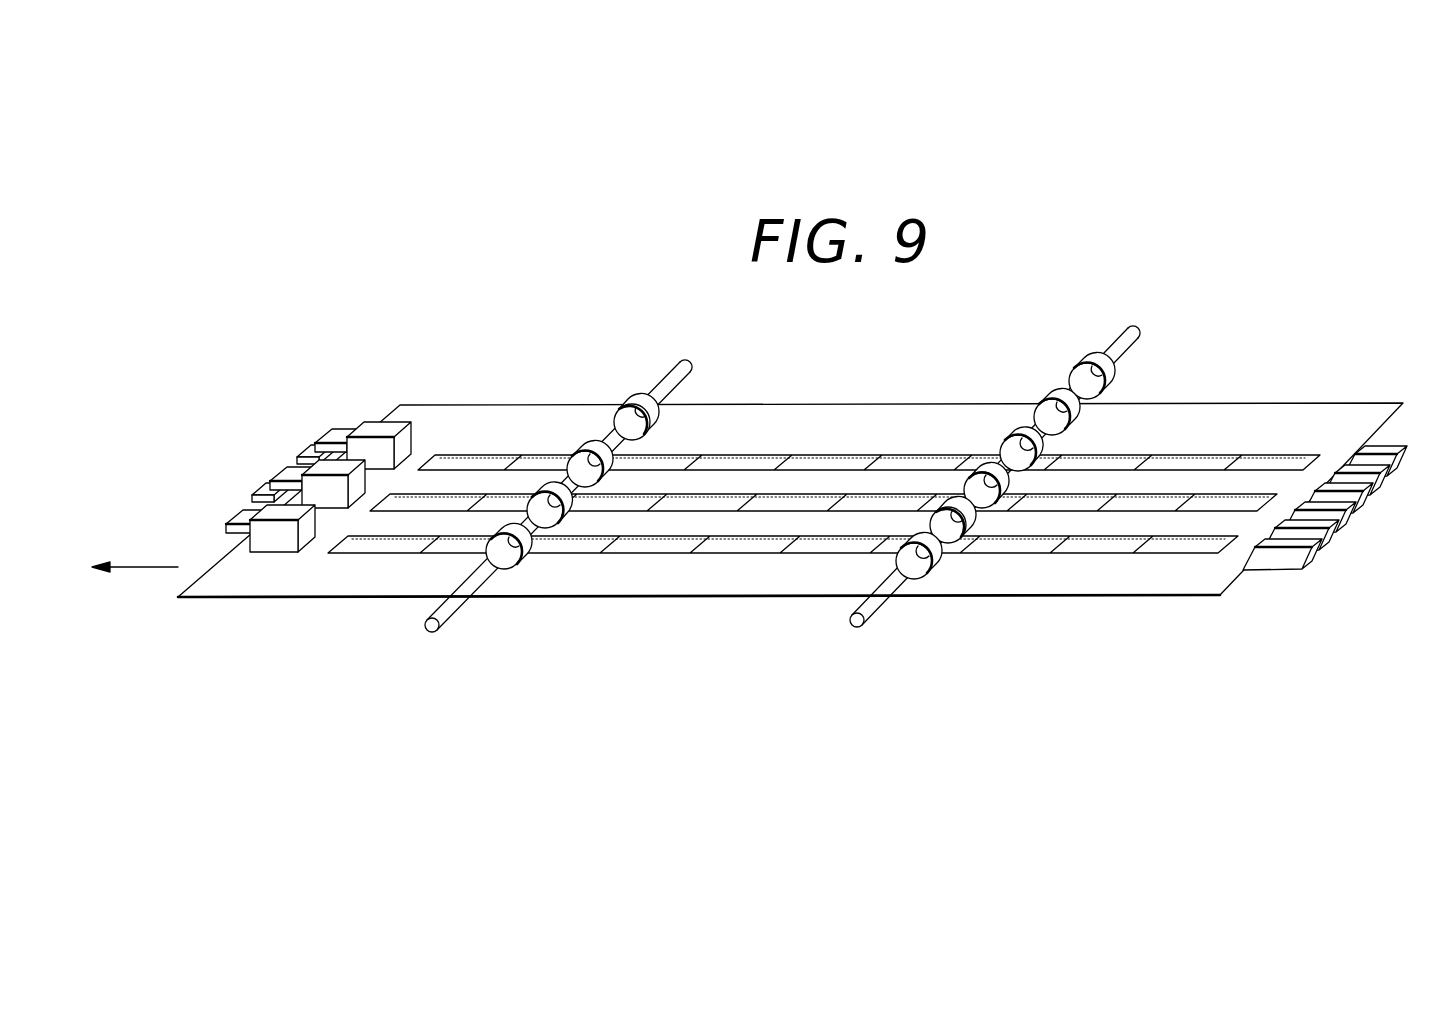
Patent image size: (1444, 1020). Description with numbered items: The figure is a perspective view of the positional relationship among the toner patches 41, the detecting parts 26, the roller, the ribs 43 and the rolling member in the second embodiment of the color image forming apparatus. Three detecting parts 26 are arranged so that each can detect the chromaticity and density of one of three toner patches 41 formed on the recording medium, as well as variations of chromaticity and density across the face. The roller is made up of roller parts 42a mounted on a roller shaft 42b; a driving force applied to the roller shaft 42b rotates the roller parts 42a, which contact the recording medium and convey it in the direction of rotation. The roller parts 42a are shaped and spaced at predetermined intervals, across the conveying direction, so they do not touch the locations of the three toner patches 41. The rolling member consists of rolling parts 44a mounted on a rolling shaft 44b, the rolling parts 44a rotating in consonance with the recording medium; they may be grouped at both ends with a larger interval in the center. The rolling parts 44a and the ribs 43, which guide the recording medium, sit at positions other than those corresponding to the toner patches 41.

The detecting part 26 is at (363, 427).
The toner patch 41 is at (1305, 427).
The roller part 42a is at (628, 403).
The roller shaft 42b is at (460, 612).
The rib 43 is at (1298, 560).
The rolling part 44a is at (933, 568).
The rolling shaft 44b is at (884, 602).